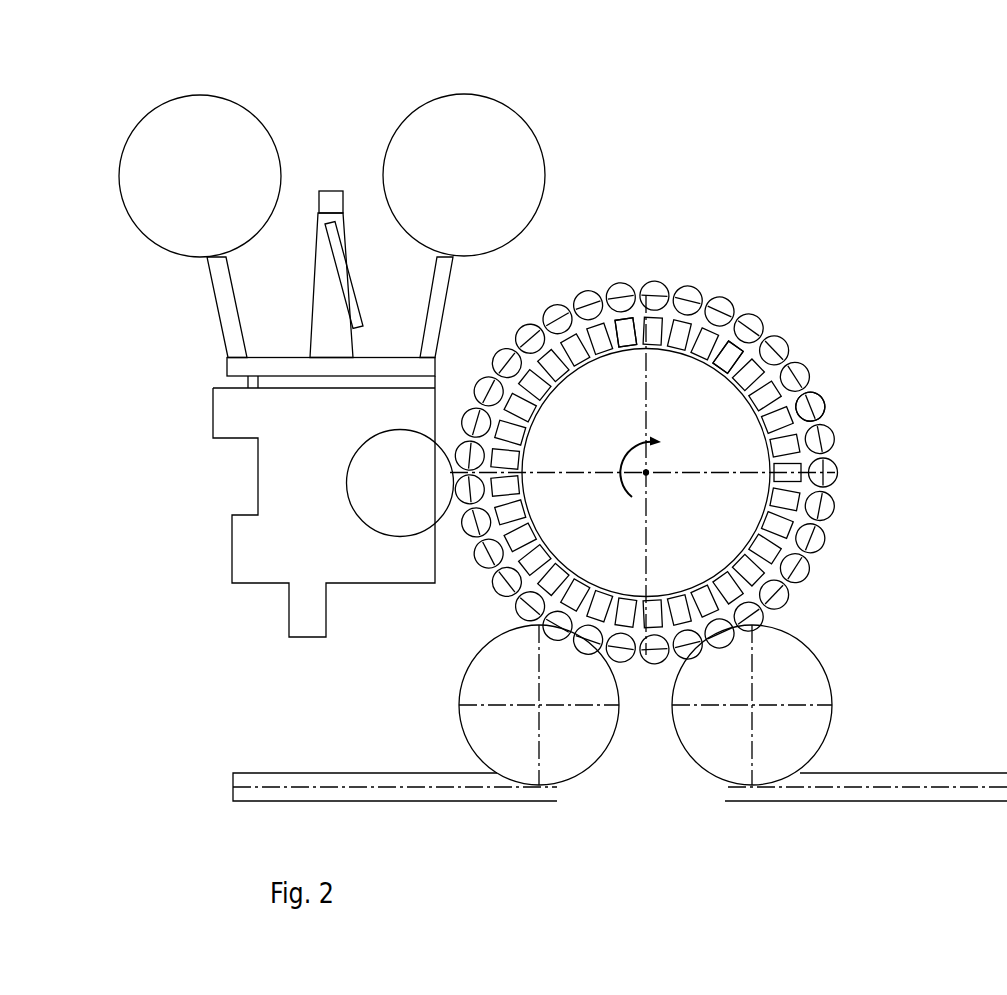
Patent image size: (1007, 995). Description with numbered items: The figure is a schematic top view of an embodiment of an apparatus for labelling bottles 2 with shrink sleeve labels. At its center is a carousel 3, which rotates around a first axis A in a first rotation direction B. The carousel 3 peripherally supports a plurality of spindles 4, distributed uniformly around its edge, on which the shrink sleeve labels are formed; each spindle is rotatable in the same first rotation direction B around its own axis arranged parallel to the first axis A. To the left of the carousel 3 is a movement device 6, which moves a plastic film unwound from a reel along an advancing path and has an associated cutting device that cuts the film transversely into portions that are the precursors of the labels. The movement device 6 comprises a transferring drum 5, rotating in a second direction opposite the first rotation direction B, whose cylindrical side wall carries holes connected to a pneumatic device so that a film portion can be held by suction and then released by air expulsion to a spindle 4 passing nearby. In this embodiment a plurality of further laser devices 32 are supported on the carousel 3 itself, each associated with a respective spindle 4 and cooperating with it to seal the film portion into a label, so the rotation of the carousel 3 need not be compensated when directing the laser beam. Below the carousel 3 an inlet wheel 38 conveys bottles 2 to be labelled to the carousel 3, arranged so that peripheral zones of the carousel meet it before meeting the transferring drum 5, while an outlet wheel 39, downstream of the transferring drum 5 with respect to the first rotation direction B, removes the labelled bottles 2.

The bottles 2 is at (669, 412).
The carousel 3 is at (720, 506).
The spindles 4 is at (823, 397).
The transferring drum 5 is at (368, 485).
The movement device 6 is at (313, 117).
The further laser devices 32 is at (627, 324).
The inlet wheel 38 is at (563, 752).
The outlet wheel 39 is at (748, 753).
The first axis A is at (646, 473).
The first rotation direction B is at (630, 457).